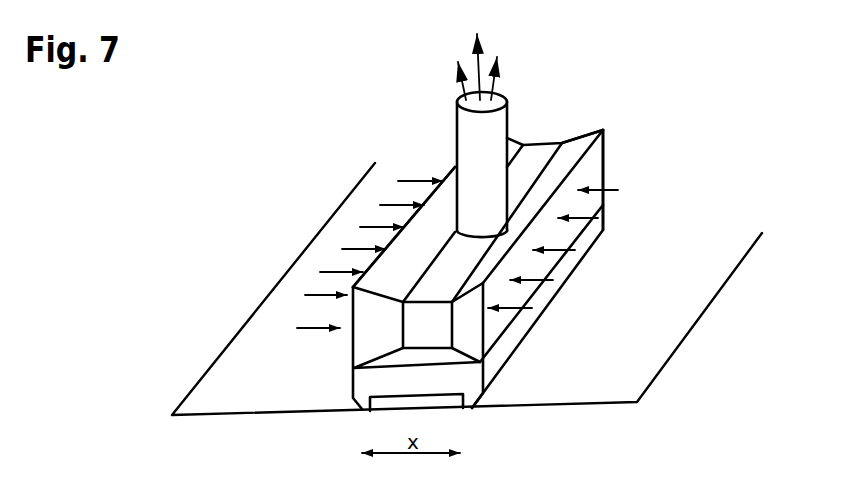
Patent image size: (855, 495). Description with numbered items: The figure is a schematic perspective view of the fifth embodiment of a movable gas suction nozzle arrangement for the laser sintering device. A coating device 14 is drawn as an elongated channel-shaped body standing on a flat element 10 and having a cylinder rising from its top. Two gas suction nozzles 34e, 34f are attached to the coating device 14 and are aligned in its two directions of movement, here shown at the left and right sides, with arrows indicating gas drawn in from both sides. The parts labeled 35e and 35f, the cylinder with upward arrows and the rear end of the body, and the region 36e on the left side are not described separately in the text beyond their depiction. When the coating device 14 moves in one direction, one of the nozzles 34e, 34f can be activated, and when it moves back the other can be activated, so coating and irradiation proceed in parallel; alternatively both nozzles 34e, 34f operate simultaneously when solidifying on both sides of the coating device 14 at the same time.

The substrate / base plate 10 is at (668, 250).
The coating device 14 is at (438, 277).
The gas suction nozzle 34e is at (377, 341).
The gas suction nozzle 34f is at (466, 328).
The outlet tube / cylinder 35e is at (486, 130).
The rear end opening 35f is at (595, 171).
The left inlet side (flow region) 36e is at (420, 218).